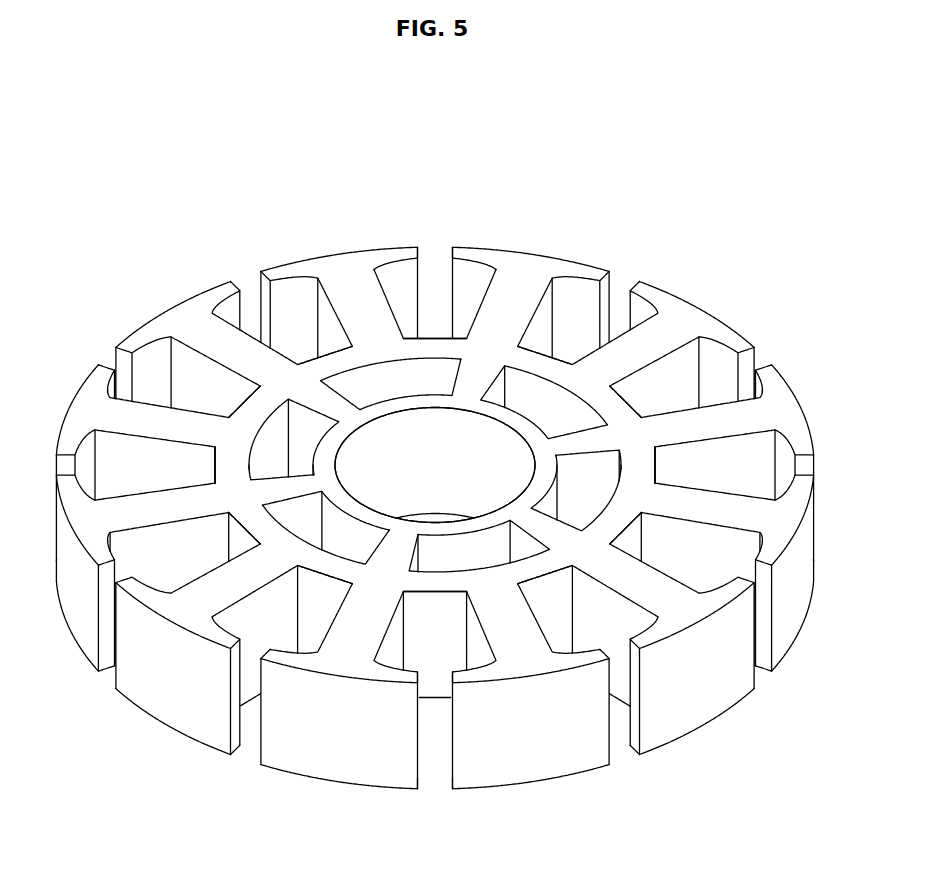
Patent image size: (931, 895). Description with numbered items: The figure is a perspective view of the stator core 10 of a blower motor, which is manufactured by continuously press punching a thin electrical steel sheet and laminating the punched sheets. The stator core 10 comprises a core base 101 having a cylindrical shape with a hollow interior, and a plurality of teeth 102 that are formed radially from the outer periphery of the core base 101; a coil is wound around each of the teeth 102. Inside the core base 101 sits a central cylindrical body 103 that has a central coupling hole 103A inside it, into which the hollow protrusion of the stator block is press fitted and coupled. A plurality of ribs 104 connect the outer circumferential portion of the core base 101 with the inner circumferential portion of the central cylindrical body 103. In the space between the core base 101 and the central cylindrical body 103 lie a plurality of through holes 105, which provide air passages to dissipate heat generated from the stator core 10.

The stator core 10 is at (146, 245).
The core base 101 is at (434, 350).
The teeth 102 is at (353, 287).
The central cylindrical body 103 is at (512, 413).
The central coupling hole 103A is at (448, 457).
The ribs 104 is at (578, 492).
The through holes 105 is at (633, 410).